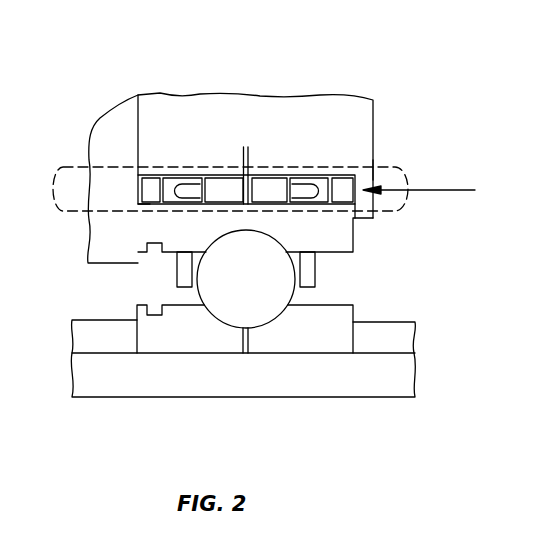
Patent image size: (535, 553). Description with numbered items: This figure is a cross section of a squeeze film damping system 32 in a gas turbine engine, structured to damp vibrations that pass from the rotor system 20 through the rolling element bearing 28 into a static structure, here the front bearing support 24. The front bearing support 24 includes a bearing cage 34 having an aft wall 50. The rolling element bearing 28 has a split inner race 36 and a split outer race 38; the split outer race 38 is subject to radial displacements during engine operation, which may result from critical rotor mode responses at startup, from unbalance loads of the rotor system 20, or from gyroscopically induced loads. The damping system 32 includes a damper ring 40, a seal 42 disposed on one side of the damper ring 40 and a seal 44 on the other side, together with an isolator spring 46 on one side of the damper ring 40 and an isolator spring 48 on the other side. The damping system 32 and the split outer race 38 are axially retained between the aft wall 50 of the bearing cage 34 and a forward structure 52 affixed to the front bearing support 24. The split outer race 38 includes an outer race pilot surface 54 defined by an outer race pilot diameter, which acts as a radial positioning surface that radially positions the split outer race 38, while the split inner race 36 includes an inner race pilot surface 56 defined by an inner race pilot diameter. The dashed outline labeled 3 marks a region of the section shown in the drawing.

The section outline of FIG. 3 is at (390, 168).
The rotor system 20 is at (417, 370).
The front bearing support 24 is at (310, 93).
The rolling element bearing 28 is at (252, 273).
The squeeze film damping system 32 is at (434, 194).
The bearing cage 34 is at (373, 170).
The split inner race 36 is at (343, 310).
The split outer race 38 is at (353, 240).
The damper ring 40 is at (223, 175).
The seal 42 is at (177, 175).
The seal 44 is at (298, 175).
The isolator spring 46 is at (148, 175).
The isolator spring 48 is at (345, 175).
The aft wall 50 is at (362, 220).
The forward structure 52 is at (108, 133).
The outer race pilot surface 54 is at (153, 208).
The inner race pilot surface 56 is at (287, 343).